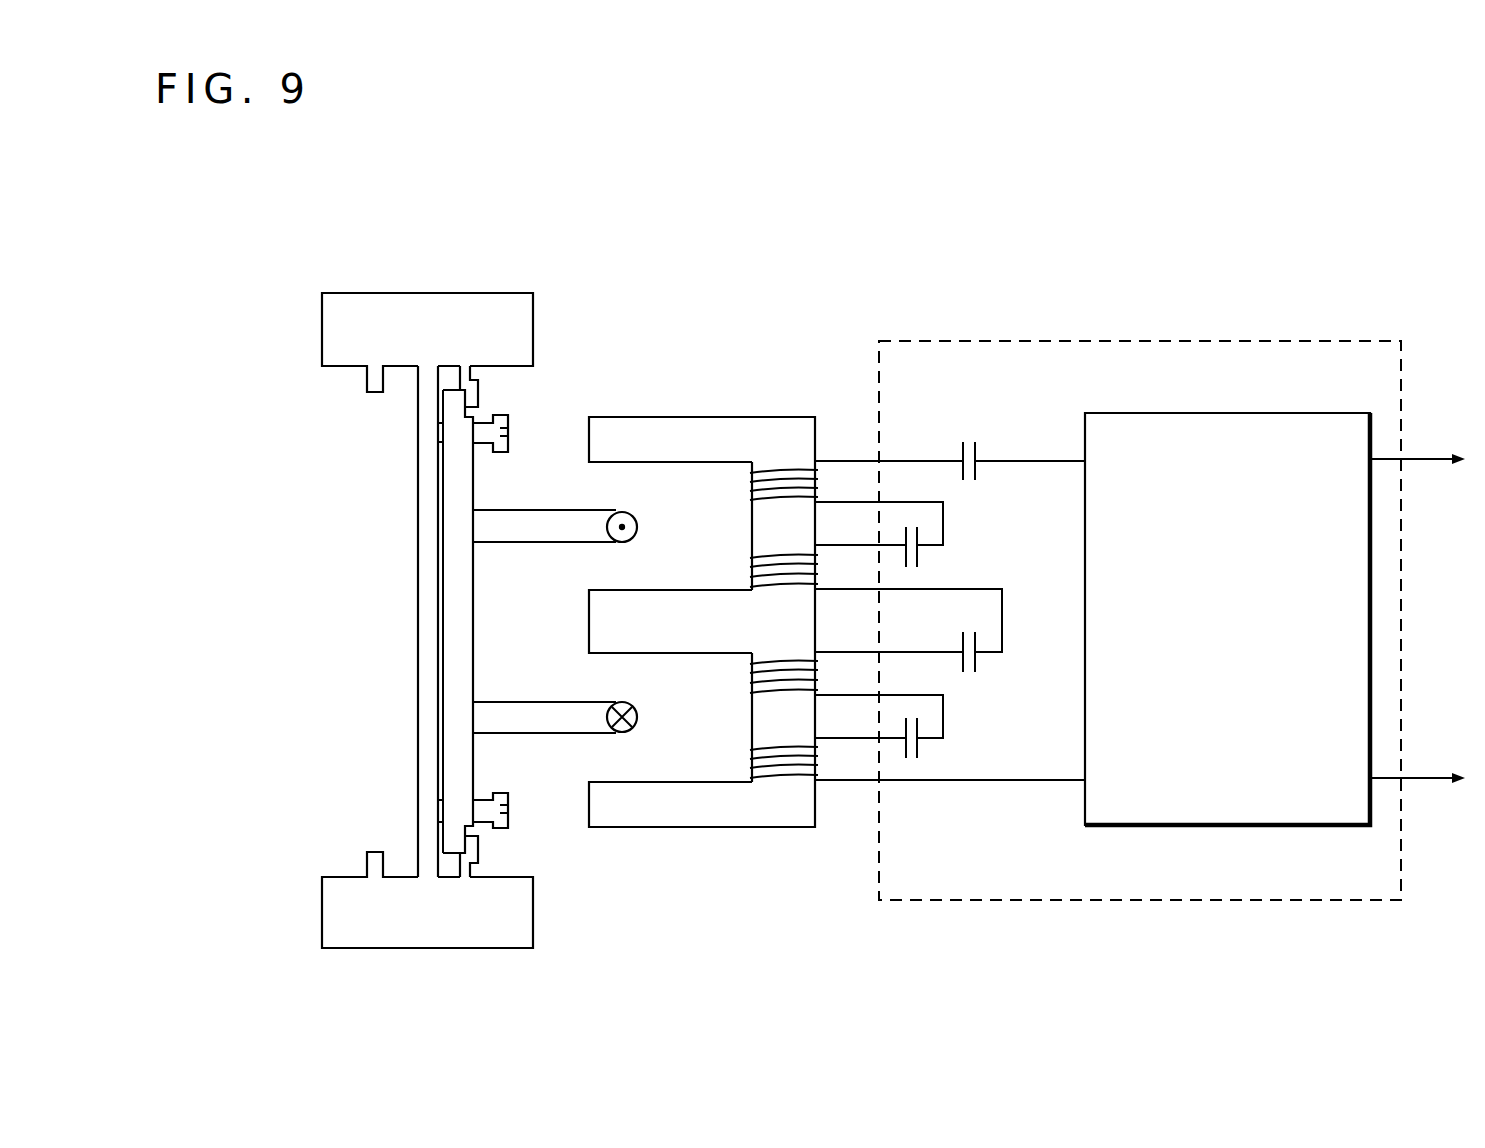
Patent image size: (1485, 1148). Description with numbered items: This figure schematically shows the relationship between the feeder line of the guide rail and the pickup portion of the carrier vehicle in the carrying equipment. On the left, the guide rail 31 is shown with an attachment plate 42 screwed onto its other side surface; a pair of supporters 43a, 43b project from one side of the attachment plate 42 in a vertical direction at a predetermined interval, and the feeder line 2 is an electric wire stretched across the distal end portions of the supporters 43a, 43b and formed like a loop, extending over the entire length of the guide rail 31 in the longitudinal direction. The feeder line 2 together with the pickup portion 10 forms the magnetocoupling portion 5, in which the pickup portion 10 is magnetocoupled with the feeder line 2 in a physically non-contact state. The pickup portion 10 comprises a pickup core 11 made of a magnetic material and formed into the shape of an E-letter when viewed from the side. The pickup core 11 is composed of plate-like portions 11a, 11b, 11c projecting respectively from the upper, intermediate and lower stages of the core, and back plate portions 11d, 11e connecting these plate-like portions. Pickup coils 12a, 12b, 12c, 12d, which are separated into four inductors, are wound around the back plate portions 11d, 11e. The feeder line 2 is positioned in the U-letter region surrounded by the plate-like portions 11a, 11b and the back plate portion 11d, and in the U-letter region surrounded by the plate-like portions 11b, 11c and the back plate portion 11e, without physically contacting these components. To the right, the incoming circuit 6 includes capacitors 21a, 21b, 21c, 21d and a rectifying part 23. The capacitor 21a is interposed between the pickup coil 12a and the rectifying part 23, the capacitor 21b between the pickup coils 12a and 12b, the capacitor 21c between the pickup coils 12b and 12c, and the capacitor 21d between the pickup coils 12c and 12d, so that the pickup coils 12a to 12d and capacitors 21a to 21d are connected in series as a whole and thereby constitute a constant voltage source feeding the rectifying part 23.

The feeder line 2 is at (632, 540).
The magnetocoupling portion 5 is at (746, 599).
The incoming circuit 6 is at (1140, 555).
The pickup portion 10 is at (666, 580).
The pickup core 11 is at (655, 589).
The plate-like portion 11a is at (637, 417).
The plate-like portion 11b is at (592, 633).
The plate-like portion 11c is at (693, 815).
The back plate portion 11d is at (755, 537).
The back plate portion 11e is at (755, 724).
The pickup coil 12a is at (818, 471).
The pickup coil 12b is at (818, 556).
The pickup coil 12c is at (818, 668).
The pickup coil 12d is at (818, 753).
The capacitor 21a is at (997, 423).
The capacitor 21b is at (912, 570).
The capacitor 21c is at (967, 675).
The capacitor 21d is at (912, 762).
The rectifying part 23 is at (1240, 685).
The guide rail 31 is at (431, 288).
The attachment plate 42 is at (460, 598).
The supporter 43a is at (546, 520).
The supporter 43b is at (548, 735).